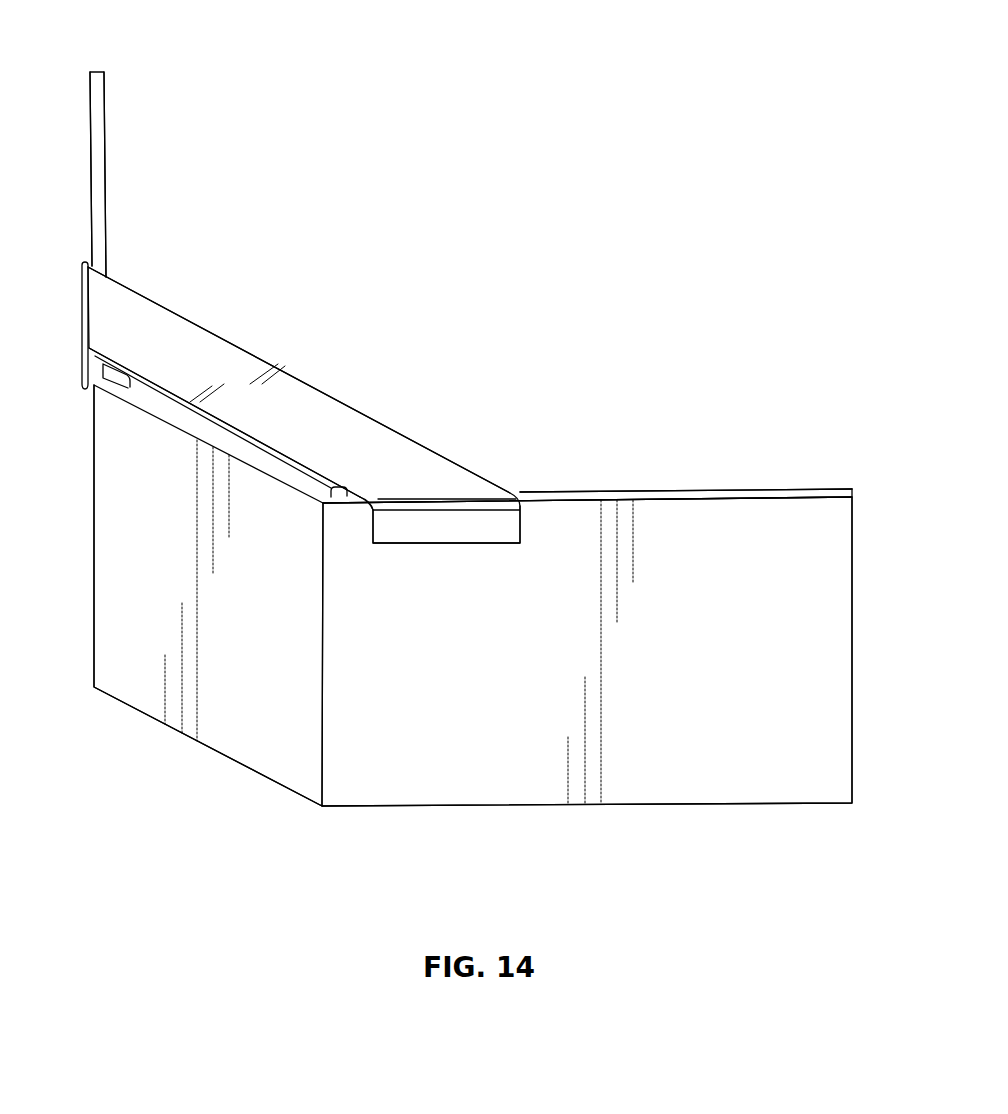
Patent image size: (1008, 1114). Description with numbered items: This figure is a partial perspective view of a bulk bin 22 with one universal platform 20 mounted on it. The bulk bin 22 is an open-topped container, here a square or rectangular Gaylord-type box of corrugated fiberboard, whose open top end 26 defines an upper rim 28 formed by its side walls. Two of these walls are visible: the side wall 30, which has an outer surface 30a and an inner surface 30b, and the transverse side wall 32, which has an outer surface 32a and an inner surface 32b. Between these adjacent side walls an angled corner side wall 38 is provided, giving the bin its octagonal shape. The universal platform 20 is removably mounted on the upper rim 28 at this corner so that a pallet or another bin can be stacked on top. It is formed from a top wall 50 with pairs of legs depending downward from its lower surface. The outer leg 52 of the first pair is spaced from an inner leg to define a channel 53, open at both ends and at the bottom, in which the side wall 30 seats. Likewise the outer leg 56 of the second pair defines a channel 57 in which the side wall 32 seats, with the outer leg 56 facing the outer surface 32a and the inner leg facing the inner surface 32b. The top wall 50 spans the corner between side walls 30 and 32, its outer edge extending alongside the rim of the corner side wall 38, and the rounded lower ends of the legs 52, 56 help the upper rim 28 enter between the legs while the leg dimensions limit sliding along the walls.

The universal platform 20 is at (243, 345).
The bulk bin 22 is at (740, 810).
The open top end 26 is at (586, 357).
The upper rim 28 is at (568, 496).
The side wall 30 is at (97, 80).
The outer surface of side wall 30a is at (90, 134).
The inner surface of side wall 30b is at (107, 143).
The side wall 32 is at (852, 598).
The outer surface of side wall 32a is at (675, 582).
The inner surface of side wall 32b is at (790, 487).
The corner side wall 38 is at (112, 628).
The top wall 50 is at (415, 457).
The outer leg 52 is at (78, 372).
The channel 53 is at (95, 382).
The outer leg 56 is at (482, 520).
The channel 57 is at (355, 504).